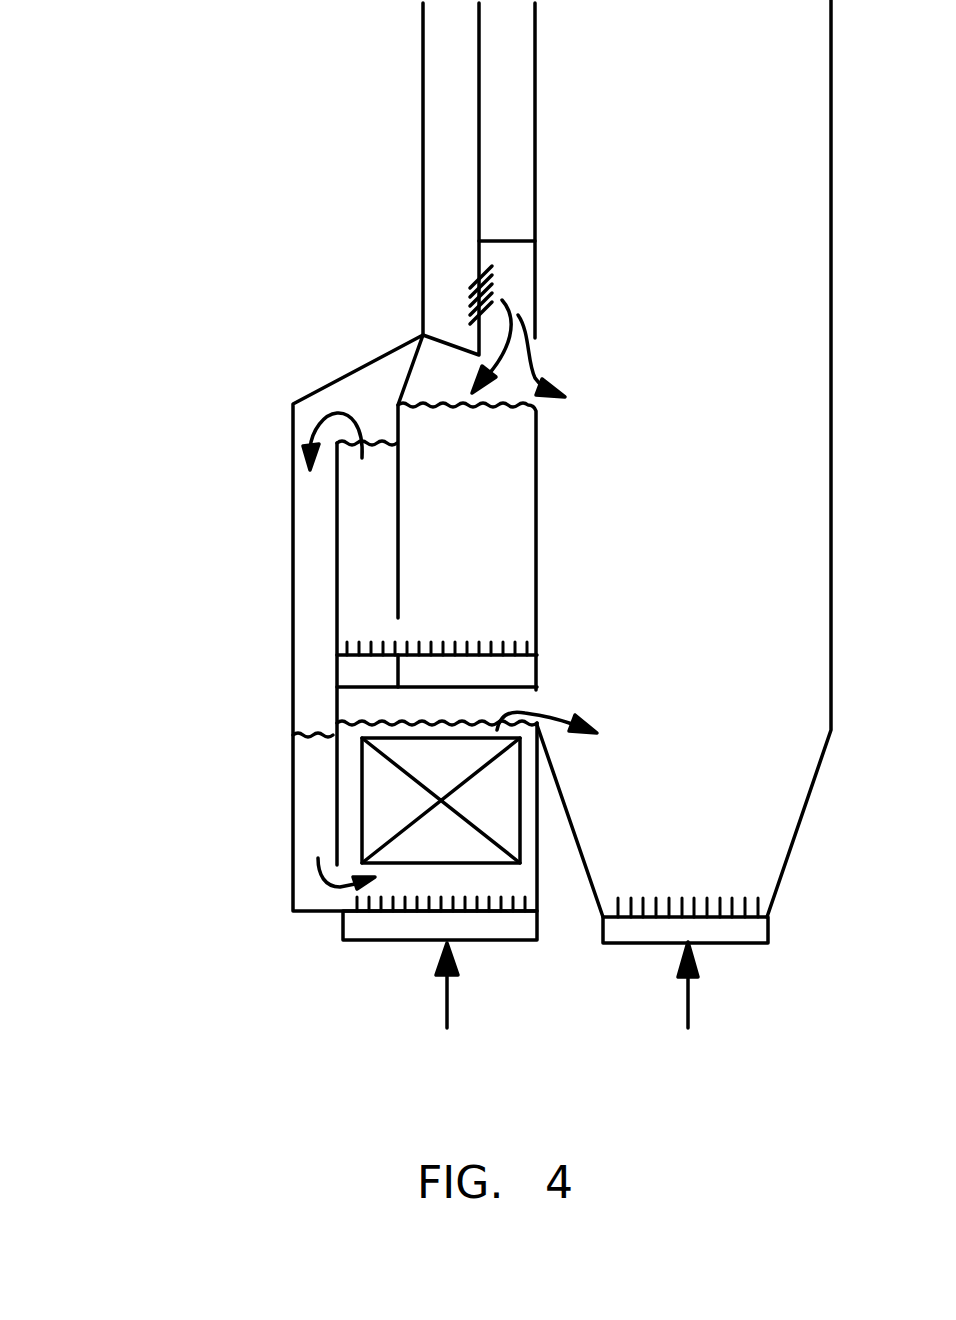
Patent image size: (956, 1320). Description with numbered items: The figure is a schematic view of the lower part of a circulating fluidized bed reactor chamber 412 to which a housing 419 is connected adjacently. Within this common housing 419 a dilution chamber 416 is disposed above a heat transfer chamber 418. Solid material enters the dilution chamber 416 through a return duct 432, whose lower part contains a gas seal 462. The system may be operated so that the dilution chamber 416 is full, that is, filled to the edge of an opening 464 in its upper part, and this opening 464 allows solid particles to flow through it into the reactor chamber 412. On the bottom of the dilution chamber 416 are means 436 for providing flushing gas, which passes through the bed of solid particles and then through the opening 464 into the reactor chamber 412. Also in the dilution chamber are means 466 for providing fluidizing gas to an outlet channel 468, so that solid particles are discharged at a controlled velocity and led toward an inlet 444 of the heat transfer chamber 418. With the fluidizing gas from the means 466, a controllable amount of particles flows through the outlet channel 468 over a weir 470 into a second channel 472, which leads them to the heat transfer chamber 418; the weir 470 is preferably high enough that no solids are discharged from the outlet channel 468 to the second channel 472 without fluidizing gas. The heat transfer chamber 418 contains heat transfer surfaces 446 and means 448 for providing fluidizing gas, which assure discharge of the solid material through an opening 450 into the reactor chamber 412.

The reactor chamber 412 is at (708, 538).
The dilution chamber 416 is at (490, 527).
The heat transfer chamber 418 is at (467, 777).
The housing 419 is at (262, 650).
The return duct 432 is at (447, 181).
The means for providing flushing gas 436 is at (445, 657).
The inlet 444 is at (343, 898).
The heat transfer surfaces 446 is at (413, 777).
The means to provide fluidizing gas 448 is at (417, 913).
The opening 450 is at (540, 697).
The gas seal 462 is at (470, 287).
The opening 464 is at (537, 367).
The means for providing fluidizing gas 466 is at (347, 652).
The outlet channel 468 is at (360, 498).
The weir 470 is at (337, 477).
The second channel 472 is at (313, 563).